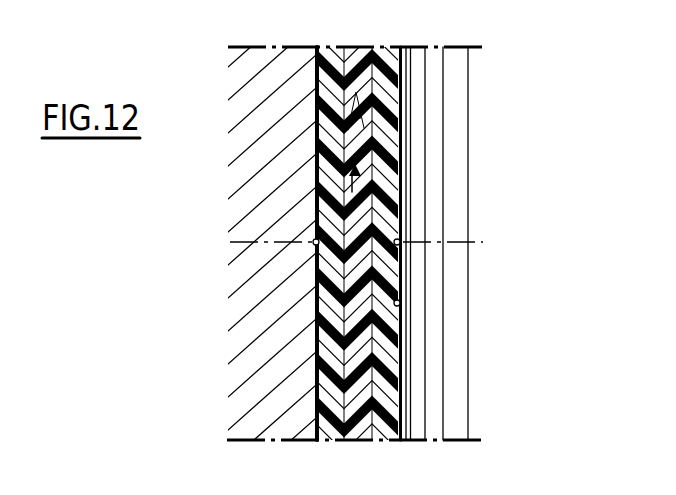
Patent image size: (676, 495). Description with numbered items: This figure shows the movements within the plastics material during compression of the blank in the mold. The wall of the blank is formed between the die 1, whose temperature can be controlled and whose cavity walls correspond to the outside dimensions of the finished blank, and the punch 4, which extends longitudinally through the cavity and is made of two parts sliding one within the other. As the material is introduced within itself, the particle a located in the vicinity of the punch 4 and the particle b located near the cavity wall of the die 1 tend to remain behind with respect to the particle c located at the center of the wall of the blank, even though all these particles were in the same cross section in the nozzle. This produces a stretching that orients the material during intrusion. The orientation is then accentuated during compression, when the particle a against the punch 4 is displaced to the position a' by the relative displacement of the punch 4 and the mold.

The die 1 is at (240, 80).
The punch 4 is at (430, 162).
The particle of material located in the vicinity of the punch a is at (447, 223).
The displaced position of particle a a' is at (450, 289).
The particle of material located in the vicinity of the cavity wall b is at (313, 241).
The particle of material located at the center of the wall of the blank c is at (401, 90).